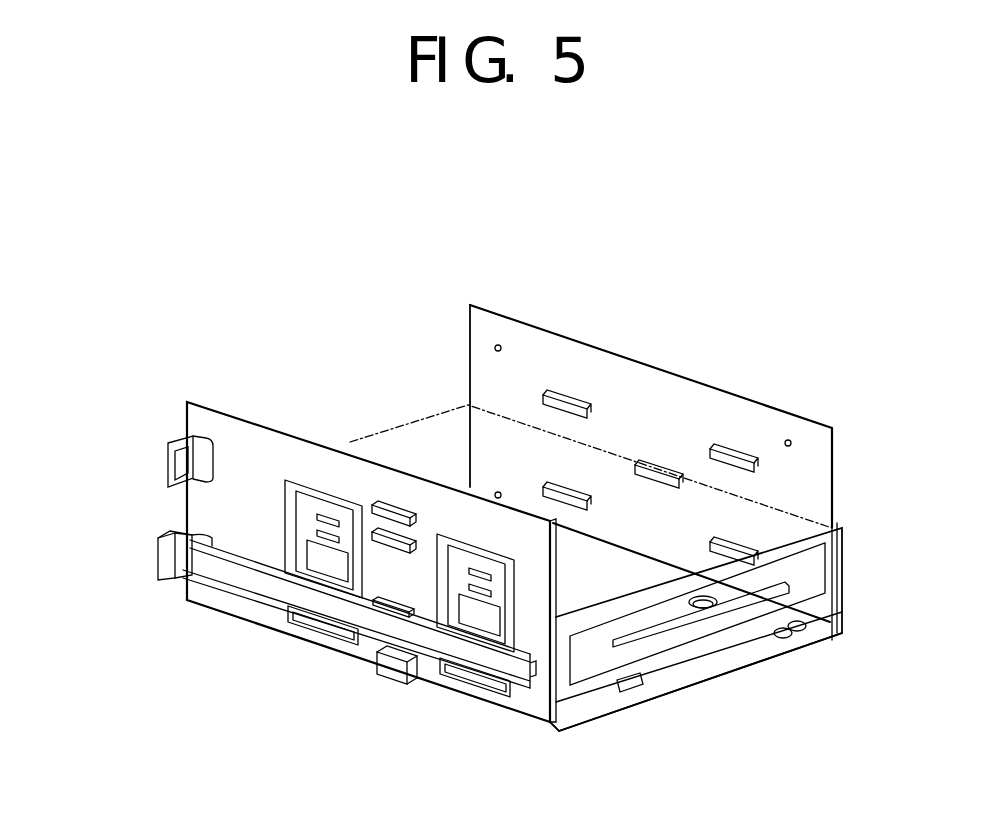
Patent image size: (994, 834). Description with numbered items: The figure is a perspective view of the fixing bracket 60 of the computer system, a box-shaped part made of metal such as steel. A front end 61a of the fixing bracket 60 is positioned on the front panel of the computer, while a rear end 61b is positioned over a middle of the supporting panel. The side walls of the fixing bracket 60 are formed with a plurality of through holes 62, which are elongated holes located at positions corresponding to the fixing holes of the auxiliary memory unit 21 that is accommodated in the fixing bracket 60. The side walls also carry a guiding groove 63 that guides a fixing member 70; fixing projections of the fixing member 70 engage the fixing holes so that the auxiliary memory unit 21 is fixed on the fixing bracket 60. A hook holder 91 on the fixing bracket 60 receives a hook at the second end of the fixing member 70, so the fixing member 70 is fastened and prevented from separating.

The auxiliary memory unit 21 is at (723, 677).
The fixing bracket 60 is at (152, 602).
The front end 61a is at (836, 483).
The rear end 61b is at (472, 336).
The through holes 62 is at (322, 518).
The guiding groove 63 is at (385, 507).
The fixing member 70 is at (263, 600).
The hook holder 91 is at (167, 448).